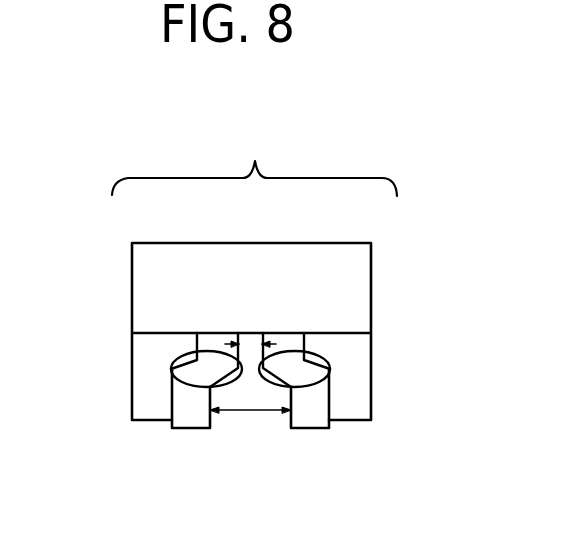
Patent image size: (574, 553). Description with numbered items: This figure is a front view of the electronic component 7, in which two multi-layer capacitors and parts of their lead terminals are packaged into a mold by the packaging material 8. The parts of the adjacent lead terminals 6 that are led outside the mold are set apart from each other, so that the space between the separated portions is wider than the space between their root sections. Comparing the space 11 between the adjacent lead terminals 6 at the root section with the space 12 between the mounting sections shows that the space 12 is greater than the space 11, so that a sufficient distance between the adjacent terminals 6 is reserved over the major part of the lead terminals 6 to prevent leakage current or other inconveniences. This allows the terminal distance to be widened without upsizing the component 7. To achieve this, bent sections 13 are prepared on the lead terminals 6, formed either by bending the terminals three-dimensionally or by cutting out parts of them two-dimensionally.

The electronic component 7 is at (246, 152).
The packaging material 8 is at (350, 263).
The lead terminal 6 is at (182, 412).
The space between adjacent lead terminals at the root section 11 is at (248, 342).
The space between mounting sections 12 is at (247, 412).
The bent section 13 is at (177, 357).